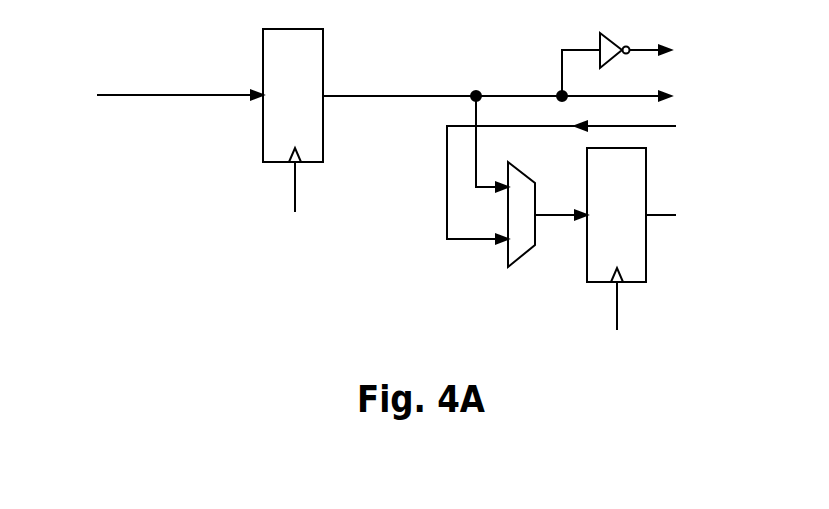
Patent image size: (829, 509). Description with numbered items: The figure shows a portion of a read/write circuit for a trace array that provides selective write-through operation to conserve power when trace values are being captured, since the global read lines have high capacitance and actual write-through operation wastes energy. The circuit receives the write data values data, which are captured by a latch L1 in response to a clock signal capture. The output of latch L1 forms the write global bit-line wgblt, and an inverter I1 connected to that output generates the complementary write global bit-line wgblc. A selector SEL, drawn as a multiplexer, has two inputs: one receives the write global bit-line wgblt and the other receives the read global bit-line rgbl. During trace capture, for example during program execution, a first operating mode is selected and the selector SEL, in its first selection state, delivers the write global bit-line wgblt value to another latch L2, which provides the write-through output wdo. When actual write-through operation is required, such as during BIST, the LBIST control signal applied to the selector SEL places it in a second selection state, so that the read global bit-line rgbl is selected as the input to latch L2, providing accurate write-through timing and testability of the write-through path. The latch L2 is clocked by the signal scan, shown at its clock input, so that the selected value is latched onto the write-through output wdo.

The latch L1 is at (303, 68).
The latch L2 is at (624, 192).
The inverter I1 is at (609, 37).
The selector SEL is at (519, 170).
The LBIST control signal LBIST is at (525, 258).
The write data values data is at (150, 92).
The clock signal capture is at (309, 198).
The write global bit-line wgblc is at (688, 49).
The write global bit-line wgblt is at (532, 93).
The read global bit-line rgbl is at (587, 179).
The write-through output wdo is at (686, 212).
The scan clock scan is at (617, 317).